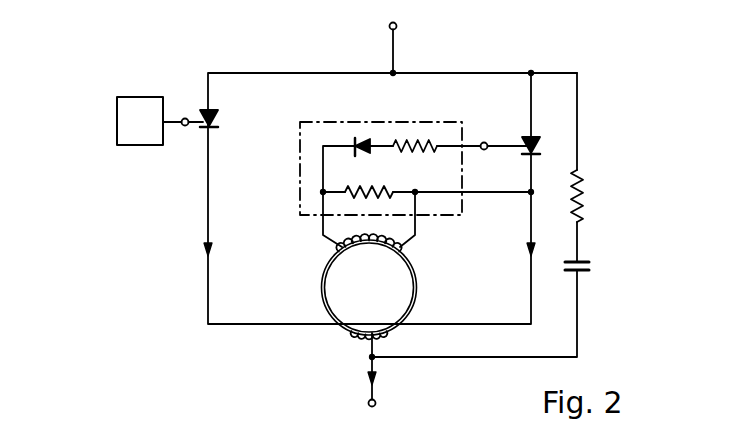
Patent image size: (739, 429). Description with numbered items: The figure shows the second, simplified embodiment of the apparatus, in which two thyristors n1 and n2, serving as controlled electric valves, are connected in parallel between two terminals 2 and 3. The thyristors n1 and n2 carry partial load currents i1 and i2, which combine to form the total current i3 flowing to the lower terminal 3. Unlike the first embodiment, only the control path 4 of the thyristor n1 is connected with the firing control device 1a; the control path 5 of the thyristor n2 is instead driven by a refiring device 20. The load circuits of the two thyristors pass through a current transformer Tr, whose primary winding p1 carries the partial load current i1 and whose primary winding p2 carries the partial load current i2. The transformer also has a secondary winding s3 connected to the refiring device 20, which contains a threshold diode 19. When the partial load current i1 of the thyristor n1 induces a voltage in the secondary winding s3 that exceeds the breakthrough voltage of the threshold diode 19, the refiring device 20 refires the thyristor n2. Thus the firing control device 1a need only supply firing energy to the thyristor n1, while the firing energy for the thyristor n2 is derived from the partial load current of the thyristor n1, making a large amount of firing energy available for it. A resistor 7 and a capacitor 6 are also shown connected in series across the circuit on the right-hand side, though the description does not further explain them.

The firing control device 1a is at (146, 103).
The terminal 2 is at (396, 28).
The terminal 3 is at (369, 401).
The control path 4 is at (184, 126).
The control path 5 is at (486, 142).
The capacitor 6 is at (580, 262).
The resistor 7 is at (584, 185).
The threshold diode 19 is at (366, 138).
The refiring device 20 is at (448, 122).
The thyristor n1 is at (216, 109).
The thyristor n2 is at (536, 137).
The secondary winding s3 is at (406, 246).
The primary winding p1 is at (360, 336).
The primary winding p2 is at (385, 336).
The current transformer Tr is at (369, 287).
The partial load current i1 is at (213, 248).
The partial load current i2 is at (527, 251).
The total current i3 is at (376, 380).